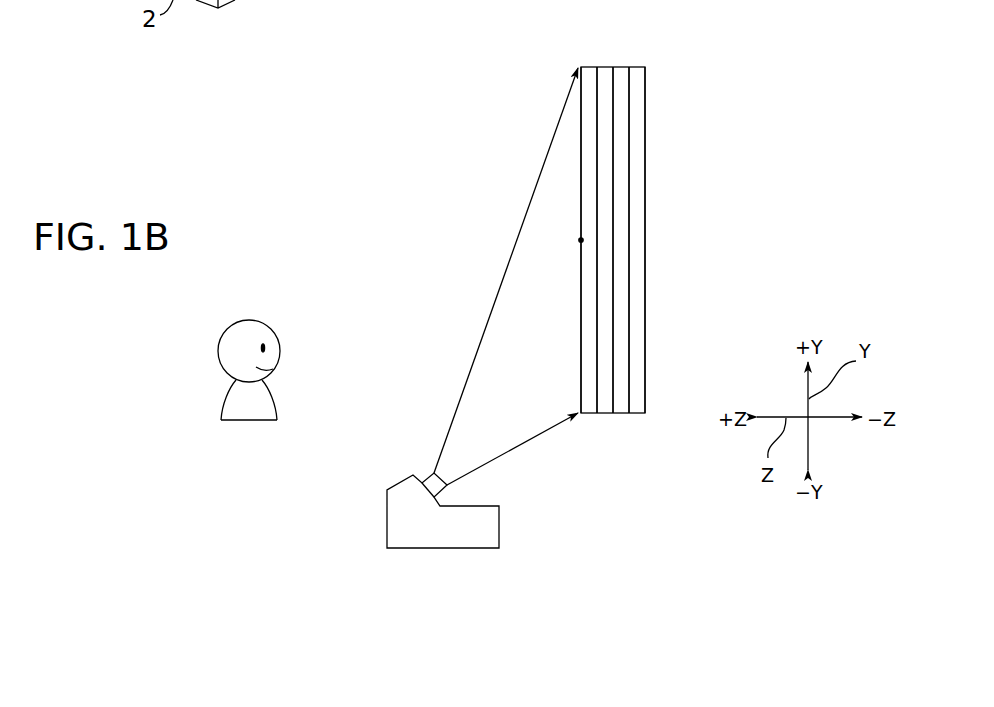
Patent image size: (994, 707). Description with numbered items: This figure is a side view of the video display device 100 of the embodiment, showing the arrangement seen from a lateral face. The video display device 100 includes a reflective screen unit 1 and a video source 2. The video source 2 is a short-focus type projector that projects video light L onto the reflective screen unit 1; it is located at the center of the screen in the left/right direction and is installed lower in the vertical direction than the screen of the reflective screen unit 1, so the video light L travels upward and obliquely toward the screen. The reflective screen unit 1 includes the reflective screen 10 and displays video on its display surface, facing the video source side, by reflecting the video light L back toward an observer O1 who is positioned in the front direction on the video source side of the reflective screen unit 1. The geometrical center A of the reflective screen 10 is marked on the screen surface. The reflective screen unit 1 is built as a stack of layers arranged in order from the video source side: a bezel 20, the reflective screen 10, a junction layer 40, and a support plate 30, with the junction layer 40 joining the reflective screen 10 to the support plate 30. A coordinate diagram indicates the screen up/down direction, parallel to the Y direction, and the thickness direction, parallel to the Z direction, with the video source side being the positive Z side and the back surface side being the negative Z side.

The reflective screen unit 1 is at (652, 55).
The video source 2 is at (395, 518).
The reflective screen 10 is at (605, 403).
The bezel 20 is at (589, 403).
The support plate 30 is at (637, 403).
The junction layer 40 is at (621, 403).
The video display device 100 is at (392, 164).
The geometrical center A is at (576, 242).
The video light L is at (495, 452).
The observer O1 is at (233, 332).